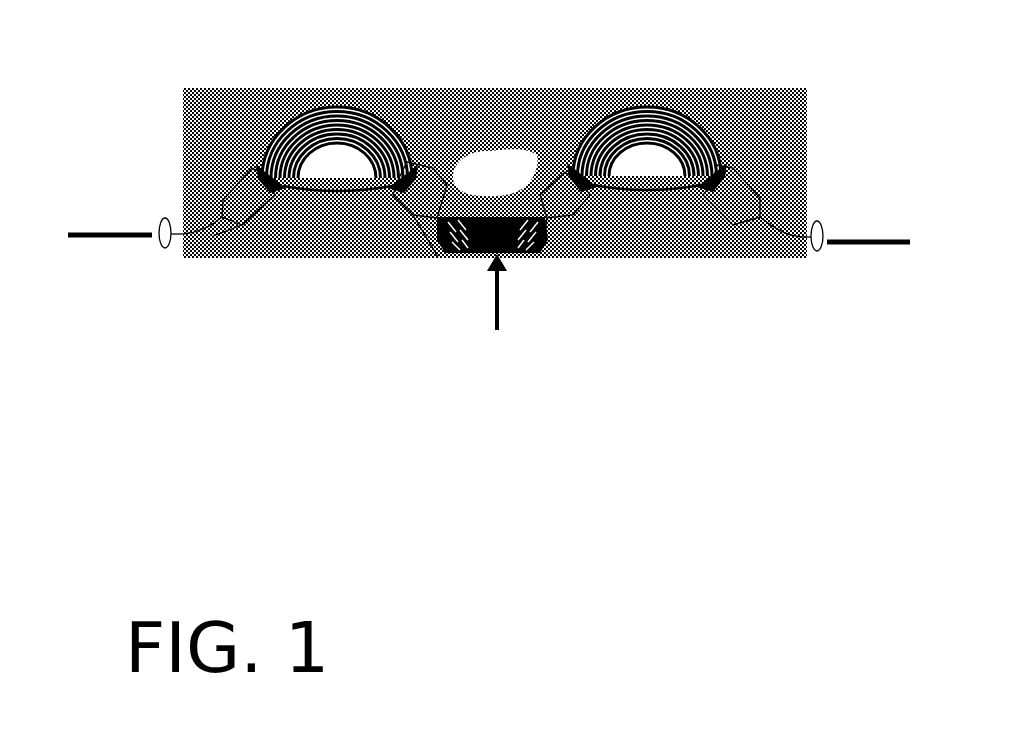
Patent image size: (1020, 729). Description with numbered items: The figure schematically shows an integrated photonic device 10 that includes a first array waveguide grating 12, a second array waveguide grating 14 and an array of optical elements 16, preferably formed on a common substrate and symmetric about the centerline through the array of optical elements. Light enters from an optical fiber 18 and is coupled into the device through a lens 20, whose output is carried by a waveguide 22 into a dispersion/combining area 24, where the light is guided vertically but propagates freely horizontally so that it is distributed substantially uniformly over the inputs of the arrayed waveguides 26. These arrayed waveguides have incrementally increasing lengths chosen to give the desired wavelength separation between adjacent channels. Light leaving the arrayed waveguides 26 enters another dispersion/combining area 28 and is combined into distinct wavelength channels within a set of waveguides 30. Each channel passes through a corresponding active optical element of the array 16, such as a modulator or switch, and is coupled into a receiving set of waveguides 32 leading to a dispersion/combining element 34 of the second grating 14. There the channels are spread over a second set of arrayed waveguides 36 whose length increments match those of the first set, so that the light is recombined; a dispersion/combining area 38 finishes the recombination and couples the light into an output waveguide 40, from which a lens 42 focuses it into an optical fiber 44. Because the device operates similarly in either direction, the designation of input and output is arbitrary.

The integrated photonic device 10 is at (826, 76).
The first array waveguide grating 12 is at (330, 64).
The second array waveguide grating 14 is at (642, 65).
The array of optical elements 16 is at (510, 296).
The optical fiber 18 is at (93, 244).
The lens 20 is at (163, 257).
The waveguide 22 is at (213, 237).
The dispersion/combining area 24 is at (269, 229).
The arrayed waveguides 26 is at (300, 104).
The dispersion/combining area 28 is at (447, 183).
The set of waveguides 30 is at (438, 257).
The receiving set of waveguides 32 is at (545, 251).
The dispersion/combining element 34 is at (573, 215).
The arrayed waveguides 36 is at (687, 107).
The dispersion/combining area 38 is at (733, 226).
The output waveguide 40 is at (787, 240).
The lens 42 is at (820, 212).
The optical fiber 44 is at (878, 252).